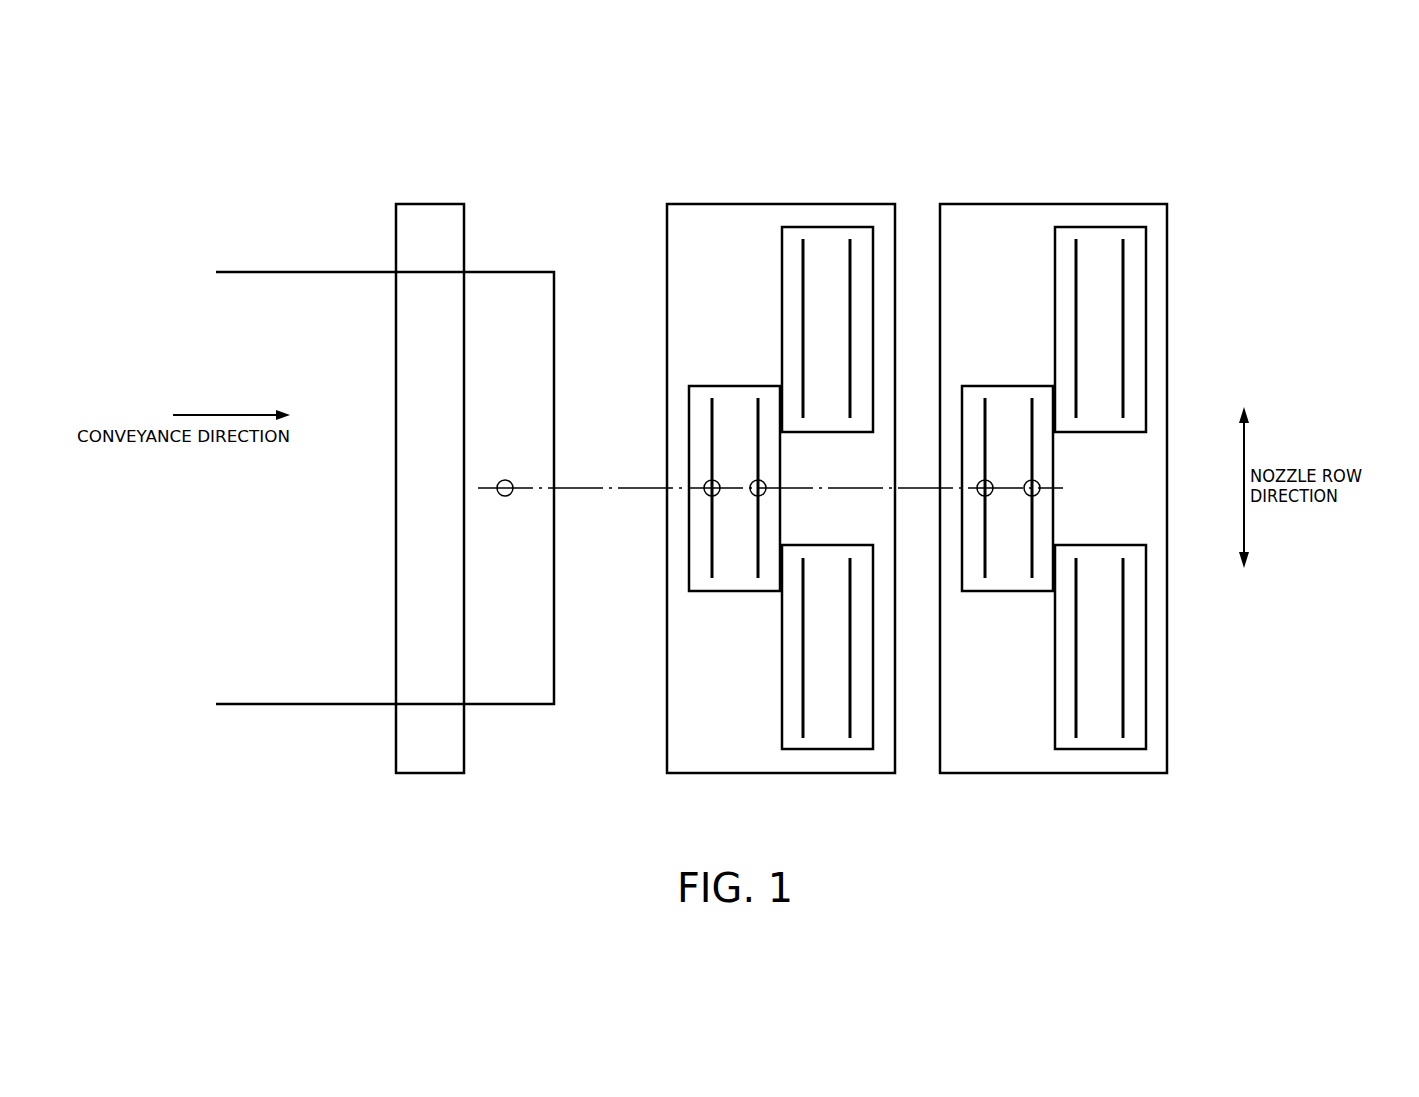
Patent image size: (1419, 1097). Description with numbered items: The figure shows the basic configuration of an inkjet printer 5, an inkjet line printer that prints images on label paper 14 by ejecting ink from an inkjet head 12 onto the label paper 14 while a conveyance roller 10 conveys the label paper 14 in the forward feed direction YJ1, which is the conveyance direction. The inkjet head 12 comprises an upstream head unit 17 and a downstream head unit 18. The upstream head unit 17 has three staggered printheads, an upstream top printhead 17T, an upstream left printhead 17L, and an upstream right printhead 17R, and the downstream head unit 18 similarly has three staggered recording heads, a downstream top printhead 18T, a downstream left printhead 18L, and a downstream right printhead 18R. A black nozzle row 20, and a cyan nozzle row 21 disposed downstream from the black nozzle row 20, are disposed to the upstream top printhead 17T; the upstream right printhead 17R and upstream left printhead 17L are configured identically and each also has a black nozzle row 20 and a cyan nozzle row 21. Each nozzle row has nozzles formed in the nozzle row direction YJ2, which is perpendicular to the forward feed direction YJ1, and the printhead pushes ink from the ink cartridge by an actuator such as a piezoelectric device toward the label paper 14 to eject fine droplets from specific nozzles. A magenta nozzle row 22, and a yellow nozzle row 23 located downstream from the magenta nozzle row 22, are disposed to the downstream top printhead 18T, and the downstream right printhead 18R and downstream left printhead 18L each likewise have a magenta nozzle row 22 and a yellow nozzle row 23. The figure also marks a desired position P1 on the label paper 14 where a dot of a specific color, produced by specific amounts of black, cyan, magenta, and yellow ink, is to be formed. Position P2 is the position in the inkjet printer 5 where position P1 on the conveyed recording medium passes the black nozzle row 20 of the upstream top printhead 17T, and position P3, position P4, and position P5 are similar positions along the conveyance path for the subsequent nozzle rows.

The inkjet printer 5 is at (543, 175).
The conveyance roller 10 is at (396, 226).
The inkjet head 12 is at (945, 165).
The label paper 14 is at (510, 272).
The upstream head unit 17 is at (858, 204).
The upstream left printhead 17L is at (795, 227).
The upstream top printhead 17T is at (740, 386).
The upstream right printhead 17R is at (823, 545).
The downstream head unit 18 is at (988, 204).
The downstream left printhead 18L is at (1068, 227).
The downstream top printhead 18T is at (1013, 386).
The downstream right printhead 18R is at (1097, 545).
The black nozzle row 20 is at (808, 420).
The cyan nozzle row 21 is at (853, 420).
The magenta nozzle row 22 is at (1080, 420).
The yellow nozzle row 23 is at (1125, 420).
The desired position P1 is at (505, 480).
The position P2 is at (716, 481).
The position P3 is at (755, 496).
The position P4 is at (989, 481).
The position P5 is at (1028, 496).
The forward feed direction YJ1 is at (233, 415).
The nozzle row direction YJ2 is at (1242, 552).